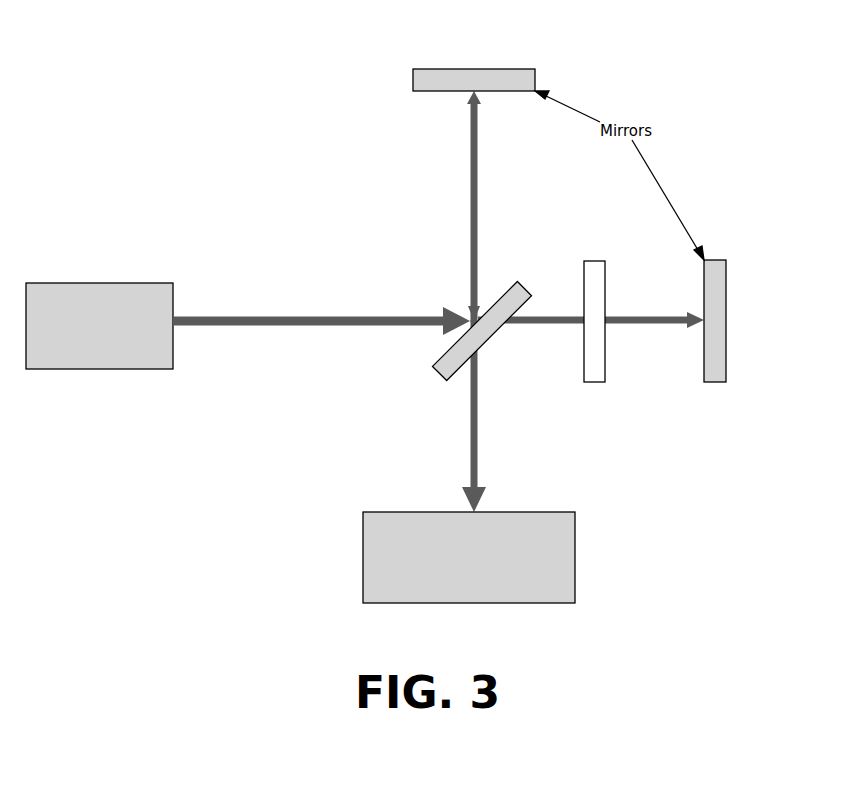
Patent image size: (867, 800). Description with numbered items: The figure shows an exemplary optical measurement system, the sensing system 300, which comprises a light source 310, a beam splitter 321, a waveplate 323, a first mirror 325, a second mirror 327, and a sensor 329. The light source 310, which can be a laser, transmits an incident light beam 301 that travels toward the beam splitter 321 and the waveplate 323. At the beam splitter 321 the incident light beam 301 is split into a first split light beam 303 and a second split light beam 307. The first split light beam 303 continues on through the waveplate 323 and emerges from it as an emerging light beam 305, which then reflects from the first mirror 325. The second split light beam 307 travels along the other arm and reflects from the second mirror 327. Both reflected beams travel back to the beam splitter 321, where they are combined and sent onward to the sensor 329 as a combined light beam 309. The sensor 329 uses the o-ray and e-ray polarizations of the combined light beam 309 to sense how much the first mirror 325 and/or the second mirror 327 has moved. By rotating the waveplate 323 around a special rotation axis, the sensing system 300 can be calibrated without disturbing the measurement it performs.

The sensing system 300 is at (260, 85).
The incident light beam 301 is at (257, 318).
The first split light beam 303 is at (561, 318).
The emerging light beam 305 is at (614, 318).
The second split light beam 307 is at (470, 262).
The combined light beam 309 is at (470, 478).
The light source 310 is at (100, 283).
The beam splitter 321 is at (488, 337).
The waveplate 323 is at (598, 375).
The first mirror 325 is at (722, 350).
The second mirror 327 is at (521, 75).
The sensor 329 is at (562, 570).